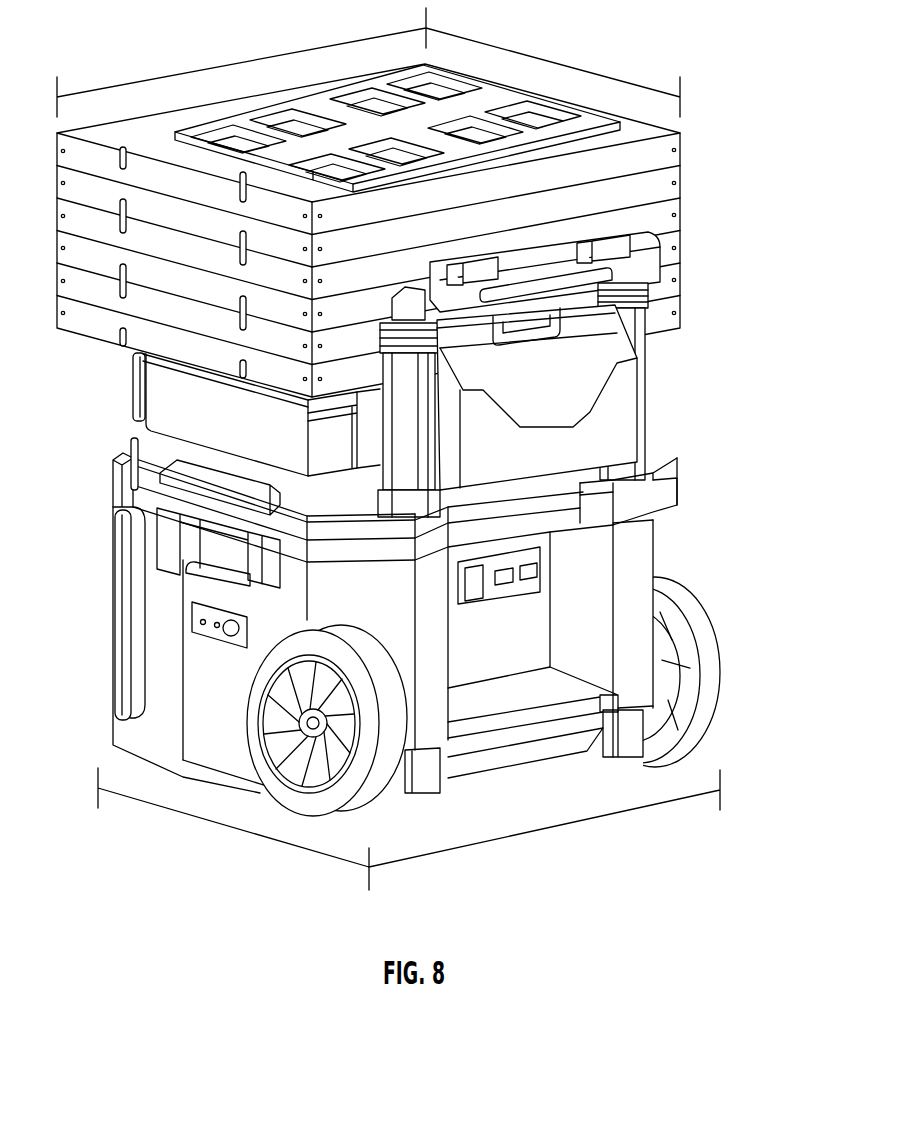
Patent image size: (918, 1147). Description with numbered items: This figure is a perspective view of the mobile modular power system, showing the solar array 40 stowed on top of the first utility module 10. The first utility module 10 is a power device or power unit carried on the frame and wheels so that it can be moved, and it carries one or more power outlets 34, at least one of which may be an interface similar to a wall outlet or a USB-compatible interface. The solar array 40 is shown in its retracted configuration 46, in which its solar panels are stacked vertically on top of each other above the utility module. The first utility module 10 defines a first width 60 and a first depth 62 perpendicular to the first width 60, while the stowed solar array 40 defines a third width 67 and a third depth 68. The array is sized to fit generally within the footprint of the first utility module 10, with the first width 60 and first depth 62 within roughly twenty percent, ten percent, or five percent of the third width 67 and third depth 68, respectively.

The first utility module 10 is at (391, 627).
The power outlets 34 is at (214, 636).
The solar array 40 is at (423, 202).
The retracted configuration 46 is at (750, 88).
The first width 60 is at (566, 840).
The first depth 62 is at (242, 848).
The third width 67 is at (216, 56).
The third depth 68 is at (572, 52).